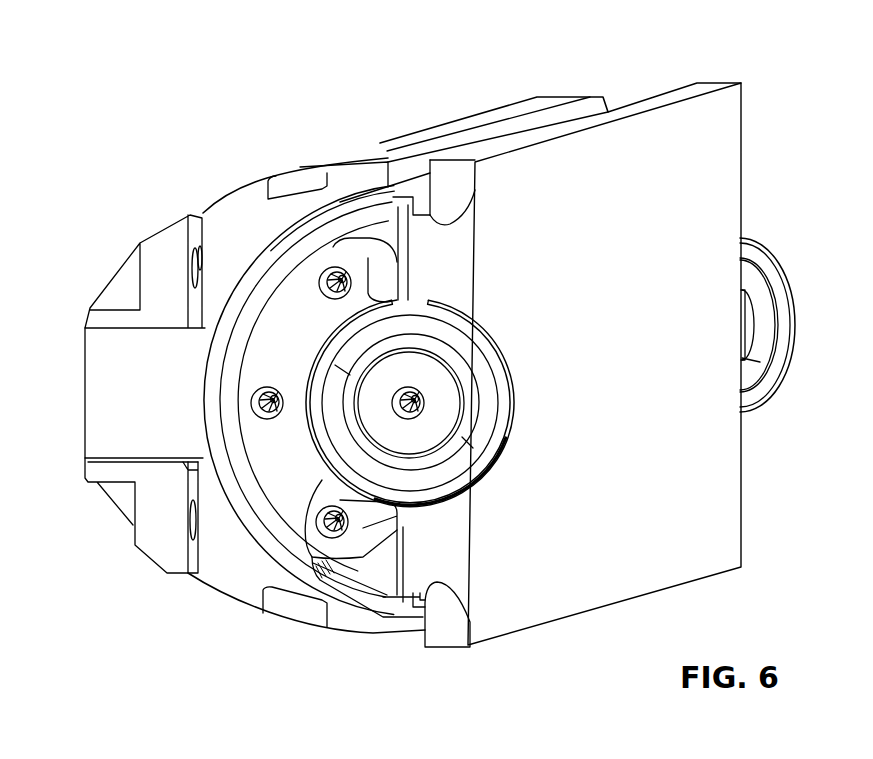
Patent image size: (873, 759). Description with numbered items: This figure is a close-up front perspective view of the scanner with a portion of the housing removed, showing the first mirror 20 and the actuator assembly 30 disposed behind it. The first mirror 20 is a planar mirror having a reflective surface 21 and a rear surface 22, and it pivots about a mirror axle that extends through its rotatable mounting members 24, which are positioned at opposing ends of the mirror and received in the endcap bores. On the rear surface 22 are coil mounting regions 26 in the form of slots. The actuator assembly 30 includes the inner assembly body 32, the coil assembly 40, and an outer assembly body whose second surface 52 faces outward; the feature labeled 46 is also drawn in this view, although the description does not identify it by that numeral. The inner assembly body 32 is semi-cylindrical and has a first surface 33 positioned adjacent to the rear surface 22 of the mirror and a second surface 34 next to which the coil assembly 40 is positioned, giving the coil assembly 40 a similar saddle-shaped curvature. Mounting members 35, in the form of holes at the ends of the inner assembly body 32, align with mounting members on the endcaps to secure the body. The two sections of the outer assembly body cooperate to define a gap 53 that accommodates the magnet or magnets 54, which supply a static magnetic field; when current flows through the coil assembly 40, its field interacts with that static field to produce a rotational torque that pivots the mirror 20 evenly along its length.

The first mirror 20 is at (552, 336).
The reflective surface 21 is at (733, 146).
The rear surface 22 is at (430, 172).
The rotatable mounting members 24 is at (797, 333).
The coil mounting regions 26 is at (478, 190).
The actuator assembly 30 is at (95, 264).
The inner assembly body 32 is at (302, 345).
The first surface 33 is at (320, 477).
The second surface 34 is at (316, 569).
The mounting members 35 is at (332, 268).
The coil assembly 40 is at (278, 257).
The slot 46 is at (447, 200).
The second surface 52 is at (206, 189).
The gap 53 is at (102, 466).
The magnet or magnets 54 is at (158, 405).